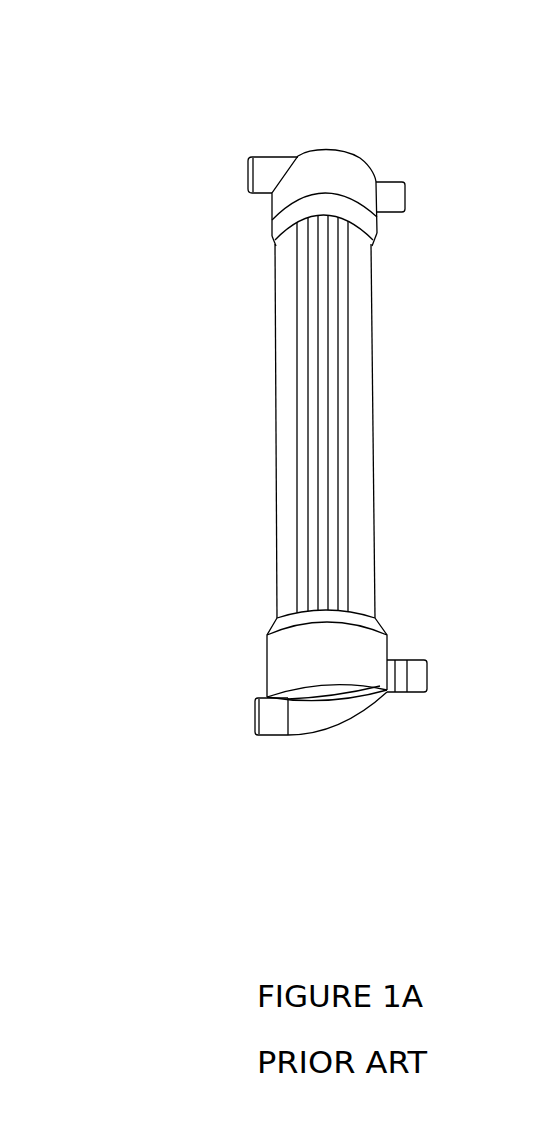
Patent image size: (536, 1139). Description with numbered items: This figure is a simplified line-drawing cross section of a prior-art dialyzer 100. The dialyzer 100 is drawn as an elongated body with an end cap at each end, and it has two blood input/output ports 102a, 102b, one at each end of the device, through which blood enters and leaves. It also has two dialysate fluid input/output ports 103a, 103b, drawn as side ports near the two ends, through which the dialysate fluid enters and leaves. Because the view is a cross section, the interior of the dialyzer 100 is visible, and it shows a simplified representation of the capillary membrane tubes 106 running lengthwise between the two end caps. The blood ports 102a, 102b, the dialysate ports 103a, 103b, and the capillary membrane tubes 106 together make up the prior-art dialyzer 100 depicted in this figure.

The dialyzer 100 is at (177, 378).
The blood input/output port 102a is at (268, 157).
The dialysate fluid input/output port 103a is at (393, 182).
The capillary membrane tubes 106 is at (307, 457).
The blood input/output port 102b is at (268, 737).
The dialysate fluid input/output port 103b is at (400, 692).